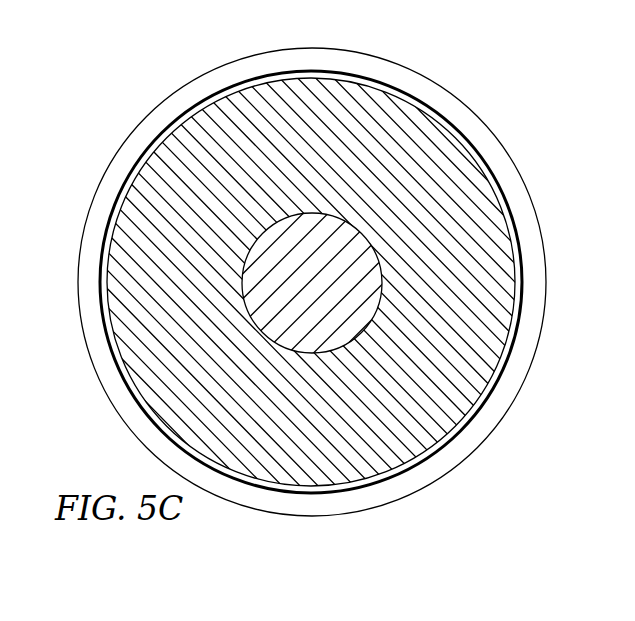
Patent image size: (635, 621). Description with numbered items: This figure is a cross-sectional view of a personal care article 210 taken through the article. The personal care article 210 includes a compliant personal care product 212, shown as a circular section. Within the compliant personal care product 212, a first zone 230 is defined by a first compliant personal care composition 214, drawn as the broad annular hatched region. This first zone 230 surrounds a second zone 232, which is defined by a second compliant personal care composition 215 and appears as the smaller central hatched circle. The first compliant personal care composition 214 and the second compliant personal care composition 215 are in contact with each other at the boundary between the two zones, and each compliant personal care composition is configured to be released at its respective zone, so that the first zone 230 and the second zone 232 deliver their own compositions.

The personal care article 210 is at (516, 100).
The compliant personal care product 212 is at (486, 327).
The first compliant personal care composition 214 is at (140, 363).
The first zone 230 is at (357, 108).
The second compliant personal care composition 215 is at (303, 325).
The second zone 232 is at (335, 244).